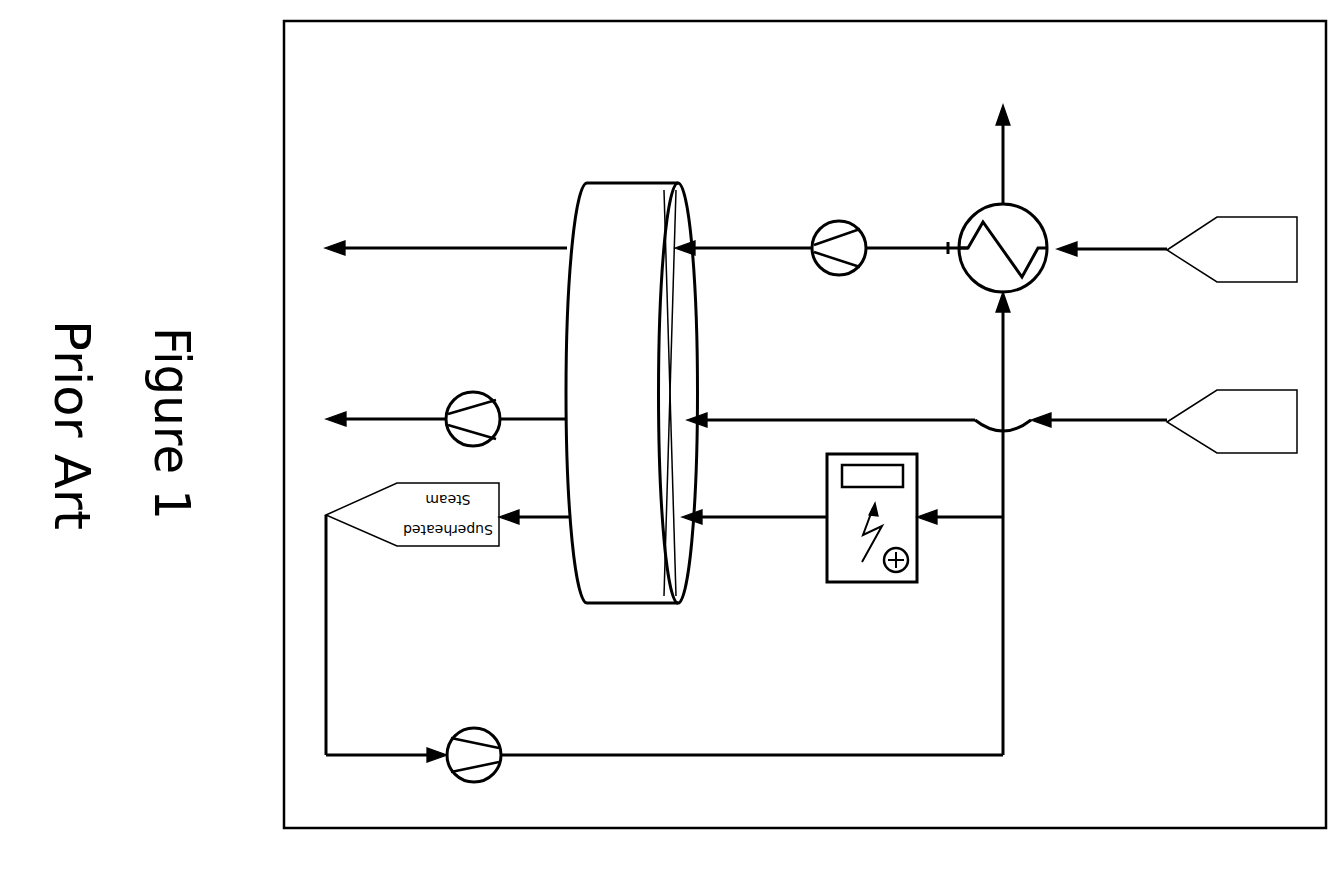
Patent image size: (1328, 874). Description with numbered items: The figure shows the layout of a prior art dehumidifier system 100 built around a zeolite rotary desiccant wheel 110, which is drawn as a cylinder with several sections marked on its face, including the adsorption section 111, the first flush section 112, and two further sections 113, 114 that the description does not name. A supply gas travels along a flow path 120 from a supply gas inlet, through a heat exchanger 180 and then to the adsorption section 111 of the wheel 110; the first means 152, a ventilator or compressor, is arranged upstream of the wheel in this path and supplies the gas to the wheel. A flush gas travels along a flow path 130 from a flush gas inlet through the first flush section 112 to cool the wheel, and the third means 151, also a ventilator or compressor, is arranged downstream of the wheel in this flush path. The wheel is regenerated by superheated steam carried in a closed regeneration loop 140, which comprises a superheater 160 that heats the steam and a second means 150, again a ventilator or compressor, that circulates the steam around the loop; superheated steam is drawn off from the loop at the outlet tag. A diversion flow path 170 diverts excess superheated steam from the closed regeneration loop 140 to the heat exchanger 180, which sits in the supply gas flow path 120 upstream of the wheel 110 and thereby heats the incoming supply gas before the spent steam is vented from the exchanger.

The dehumidifier system 100 is at (805, 424).
The zeolite rotary desiccant wheel 110 is at (630, 165).
The adsorption section 111 is at (694, 286).
The first flush section 112 is at (704, 343).
The third wheel zone 113 is at (679, 377).
The fourth wheel zone 114 is at (685, 559).
The flow path for supply gas 120 is at (1116, 274).
The flow path for flush gas 130 is at (1116, 450).
The closed regeneration loop 140 is at (1018, 686).
The second means 150 is at (474, 710).
The third means 151 is at (473, 374).
The first means 152 is at (838, 191).
The superheater 160 is at (875, 600).
The diversion flow path 170 is at (1014, 480).
The heat exchanger 180 is at (1046, 201).